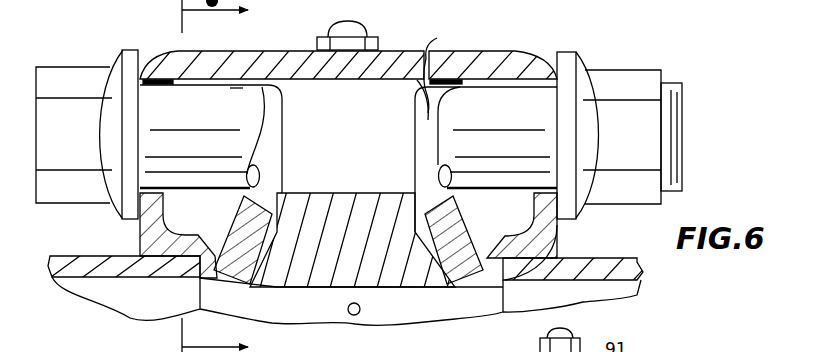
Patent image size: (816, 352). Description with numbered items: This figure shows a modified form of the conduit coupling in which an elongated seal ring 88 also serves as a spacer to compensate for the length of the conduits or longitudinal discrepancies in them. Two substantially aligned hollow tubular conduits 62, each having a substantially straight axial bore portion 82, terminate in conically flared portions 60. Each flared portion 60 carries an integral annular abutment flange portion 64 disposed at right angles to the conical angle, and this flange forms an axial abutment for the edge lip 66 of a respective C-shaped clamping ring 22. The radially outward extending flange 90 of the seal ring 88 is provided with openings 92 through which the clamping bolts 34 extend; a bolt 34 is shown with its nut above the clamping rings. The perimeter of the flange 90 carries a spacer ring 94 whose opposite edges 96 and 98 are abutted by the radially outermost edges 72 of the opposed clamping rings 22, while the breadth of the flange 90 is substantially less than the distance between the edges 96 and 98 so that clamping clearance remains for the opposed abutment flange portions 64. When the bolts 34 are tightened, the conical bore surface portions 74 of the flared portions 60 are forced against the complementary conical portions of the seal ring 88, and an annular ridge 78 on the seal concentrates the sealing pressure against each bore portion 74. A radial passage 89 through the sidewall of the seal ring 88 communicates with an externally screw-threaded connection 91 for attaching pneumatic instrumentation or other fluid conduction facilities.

The clamping ring 22 is at (164, 66).
The clamping bolt 34 is at (565, 82).
The conically flared portion 60 is at (200, 279).
The hollow tubular conduit 62 is at (78, 267).
The annular abutment flange portion 64 is at (262, 206).
The edge lip 66 is at (232, 206).
The radially outermost edge 72 is at (230, 78).
The conical bore surface portion 74 is at (465, 81).
The annular ridge 78 is at (247, 277).
The straight axial bore portion 82 is at (144, 280).
The seal ring 88 is at (397, 268).
The radial passage 89 is at (347, 308).
The radially outward extending flange 90 is at (343, 206).
The externally screw-threaded connection 91 is at (352, 24).
The opening 92 is at (405, 79).
The spacer ring 94 is at (393, 66).
The edge of spacer ring 96 is at (290, 80).
The edge of spacer ring 98 is at (438, 122).